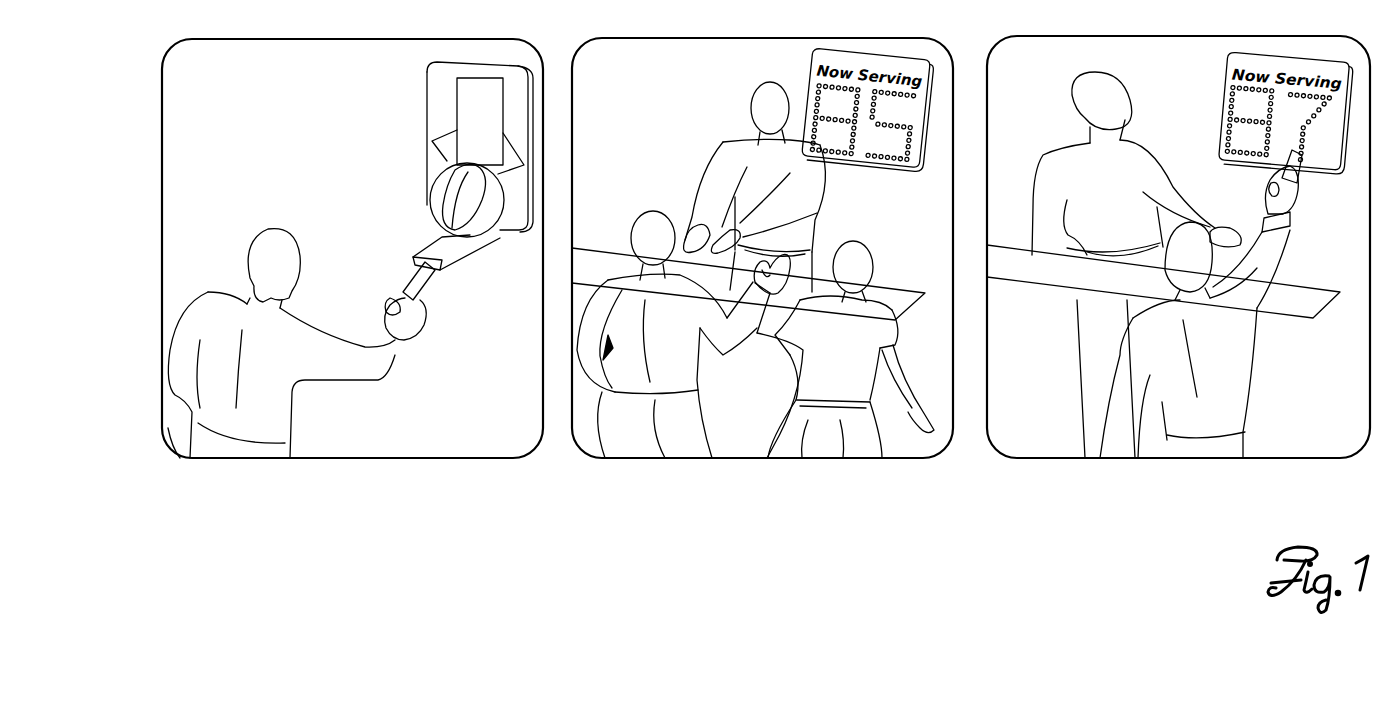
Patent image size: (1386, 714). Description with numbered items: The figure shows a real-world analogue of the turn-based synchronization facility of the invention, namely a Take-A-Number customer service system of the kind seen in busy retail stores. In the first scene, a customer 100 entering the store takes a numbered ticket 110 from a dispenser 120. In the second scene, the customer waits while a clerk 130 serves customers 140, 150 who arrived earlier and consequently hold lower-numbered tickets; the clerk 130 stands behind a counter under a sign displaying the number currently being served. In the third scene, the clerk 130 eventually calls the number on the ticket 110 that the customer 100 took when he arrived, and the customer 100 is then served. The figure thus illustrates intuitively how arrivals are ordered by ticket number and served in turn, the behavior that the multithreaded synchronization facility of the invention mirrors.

The customer 100 is at (290, 437).
The numbered ticket 110 is at (432, 281).
The dispenser 120 is at (428, 193).
The clerk 130 is at (730, 142).
The customer 140 is at (606, 286).
The customer 150 is at (895, 372).